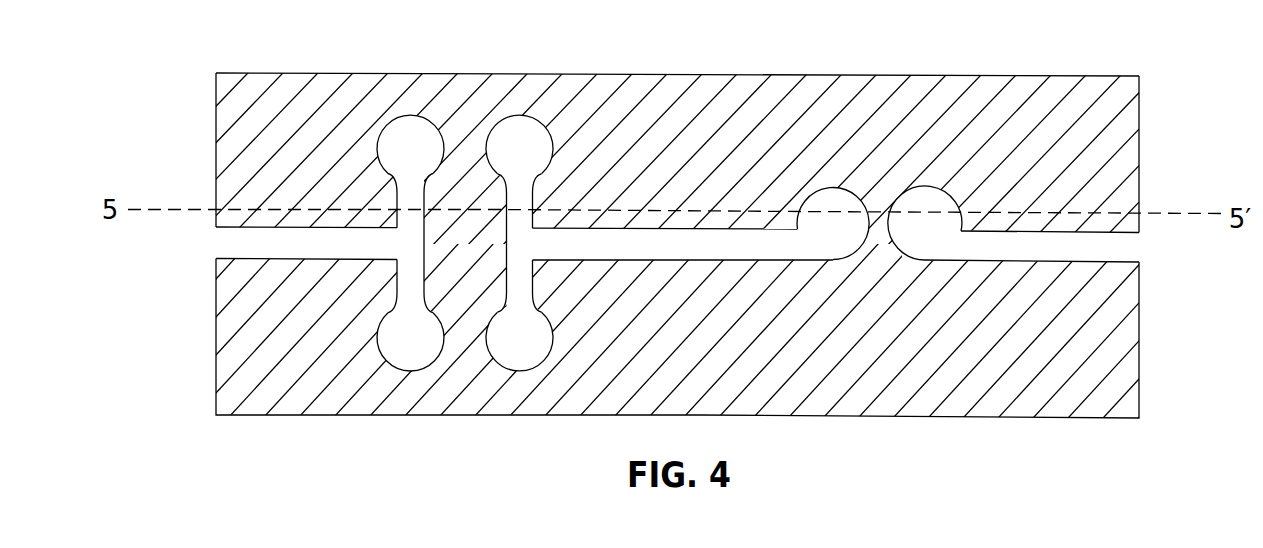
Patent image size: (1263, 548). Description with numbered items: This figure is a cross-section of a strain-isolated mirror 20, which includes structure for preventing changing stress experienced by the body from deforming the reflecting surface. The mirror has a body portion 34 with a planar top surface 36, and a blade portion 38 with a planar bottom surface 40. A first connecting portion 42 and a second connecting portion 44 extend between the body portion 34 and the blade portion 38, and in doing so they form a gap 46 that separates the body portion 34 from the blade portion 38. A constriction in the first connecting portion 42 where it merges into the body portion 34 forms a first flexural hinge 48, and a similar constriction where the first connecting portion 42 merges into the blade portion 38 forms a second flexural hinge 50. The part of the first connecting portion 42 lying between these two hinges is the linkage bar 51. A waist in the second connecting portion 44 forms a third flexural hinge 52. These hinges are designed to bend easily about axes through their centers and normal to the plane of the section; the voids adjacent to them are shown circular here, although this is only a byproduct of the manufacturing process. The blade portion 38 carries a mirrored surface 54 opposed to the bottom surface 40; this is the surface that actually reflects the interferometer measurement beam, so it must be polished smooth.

The strain-isolated mirror 20 is at (1175, 131).
The body portion 34 is at (666, 347).
The top surface 36 is at (1124, 262).
The blade portion 38 is at (666, 160).
The bottom surface 40 is at (233, 228).
The first connecting portion 42 is at (449, 256).
The second connecting portion 44 is at (863, 185).
The gap 46 is at (721, 242).
The first flexural hinge 48 is at (475, 340).
The second flexural hinge 50 is at (474, 150).
The linkage bar 51 is at (423, 240).
The third flexural hinge 52 is at (866, 230).
The mirrored surface 54 is at (680, 74).